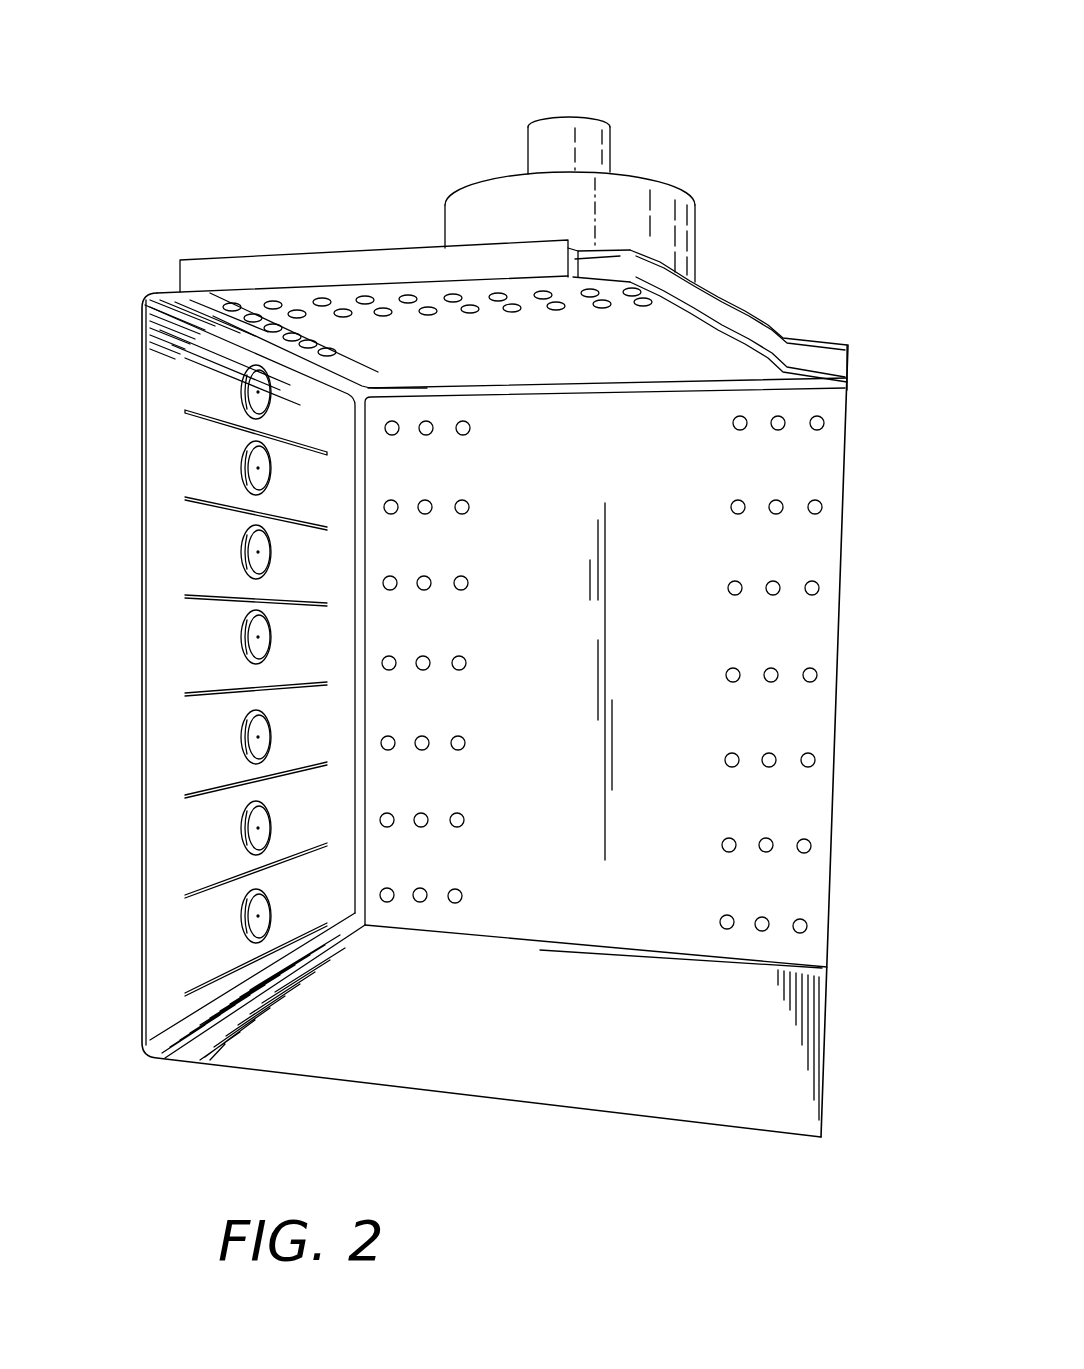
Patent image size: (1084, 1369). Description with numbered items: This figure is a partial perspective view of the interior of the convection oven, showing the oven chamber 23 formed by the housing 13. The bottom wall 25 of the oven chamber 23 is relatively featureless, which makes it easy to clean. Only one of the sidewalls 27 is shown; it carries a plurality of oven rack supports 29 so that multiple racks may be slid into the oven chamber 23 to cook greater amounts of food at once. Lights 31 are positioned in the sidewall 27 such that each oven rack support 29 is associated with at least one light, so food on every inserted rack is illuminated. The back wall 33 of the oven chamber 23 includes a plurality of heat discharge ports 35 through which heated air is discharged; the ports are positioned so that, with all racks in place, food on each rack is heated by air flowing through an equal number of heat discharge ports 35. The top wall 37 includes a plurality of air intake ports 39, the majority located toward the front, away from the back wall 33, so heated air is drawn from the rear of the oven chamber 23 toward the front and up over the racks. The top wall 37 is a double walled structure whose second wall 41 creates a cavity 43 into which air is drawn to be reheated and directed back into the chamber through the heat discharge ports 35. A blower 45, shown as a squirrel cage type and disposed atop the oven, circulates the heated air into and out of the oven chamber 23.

The housing 13 is at (148, 948).
The oven chamber 23 is at (557, 534).
The bottom wall 25 is at (722, 1105).
The sidewall 27 is at (163, 377).
The oven rack supports 29 is at (262, 960).
The lights 31 is at (265, 826).
The back wall 33 is at (795, 625).
The heat discharge ports 35 is at (808, 760).
The top wall 37 is at (392, 296).
The air intake ports 39 is at (326, 302).
The second wall 41 is at (808, 340).
The cavity 43 is at (626, 266).
The blower 45 is at (585, 118).